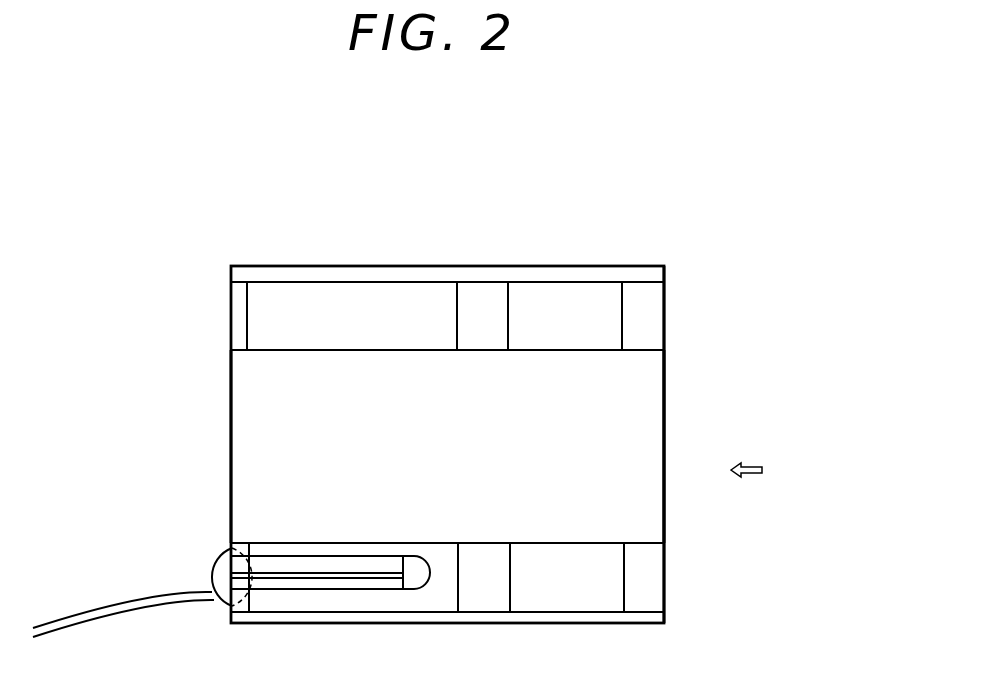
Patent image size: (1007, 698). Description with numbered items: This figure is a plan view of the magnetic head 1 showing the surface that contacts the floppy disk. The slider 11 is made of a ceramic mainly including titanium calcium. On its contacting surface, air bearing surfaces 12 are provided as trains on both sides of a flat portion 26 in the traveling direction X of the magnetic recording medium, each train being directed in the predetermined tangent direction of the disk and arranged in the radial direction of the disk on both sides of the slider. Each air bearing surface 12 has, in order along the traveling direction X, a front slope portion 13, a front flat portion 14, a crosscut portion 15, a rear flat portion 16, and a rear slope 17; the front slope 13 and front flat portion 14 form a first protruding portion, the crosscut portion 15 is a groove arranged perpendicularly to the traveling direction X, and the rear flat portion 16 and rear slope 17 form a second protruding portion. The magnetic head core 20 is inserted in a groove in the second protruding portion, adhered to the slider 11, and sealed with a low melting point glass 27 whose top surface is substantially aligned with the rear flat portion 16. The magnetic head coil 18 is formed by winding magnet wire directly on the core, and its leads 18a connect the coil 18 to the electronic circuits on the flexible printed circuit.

The magnetic head 1 is at (578, 158).
The slider 11 is at (668, 505).
The air bearing surface 12 is at (665, 300).
The front slope portion 13 is at (638, 288).
The front flat portion 14 is at (561, 288).
The crosscut portion 15 is at (480, 288).
The rear flat portion 16 is at (360, 288).
The rear slope 17 is at (236, 311).
The magnetic head coil 18 is at (212, 562).
The leads 18a is at (118, 597).
The magnetic head core 20 is at (325, 570).
The flat portion 26 is at (652, 391).
The low melting point glass 27 is at (381, 565).
The traveling direction X is at (784, 520).